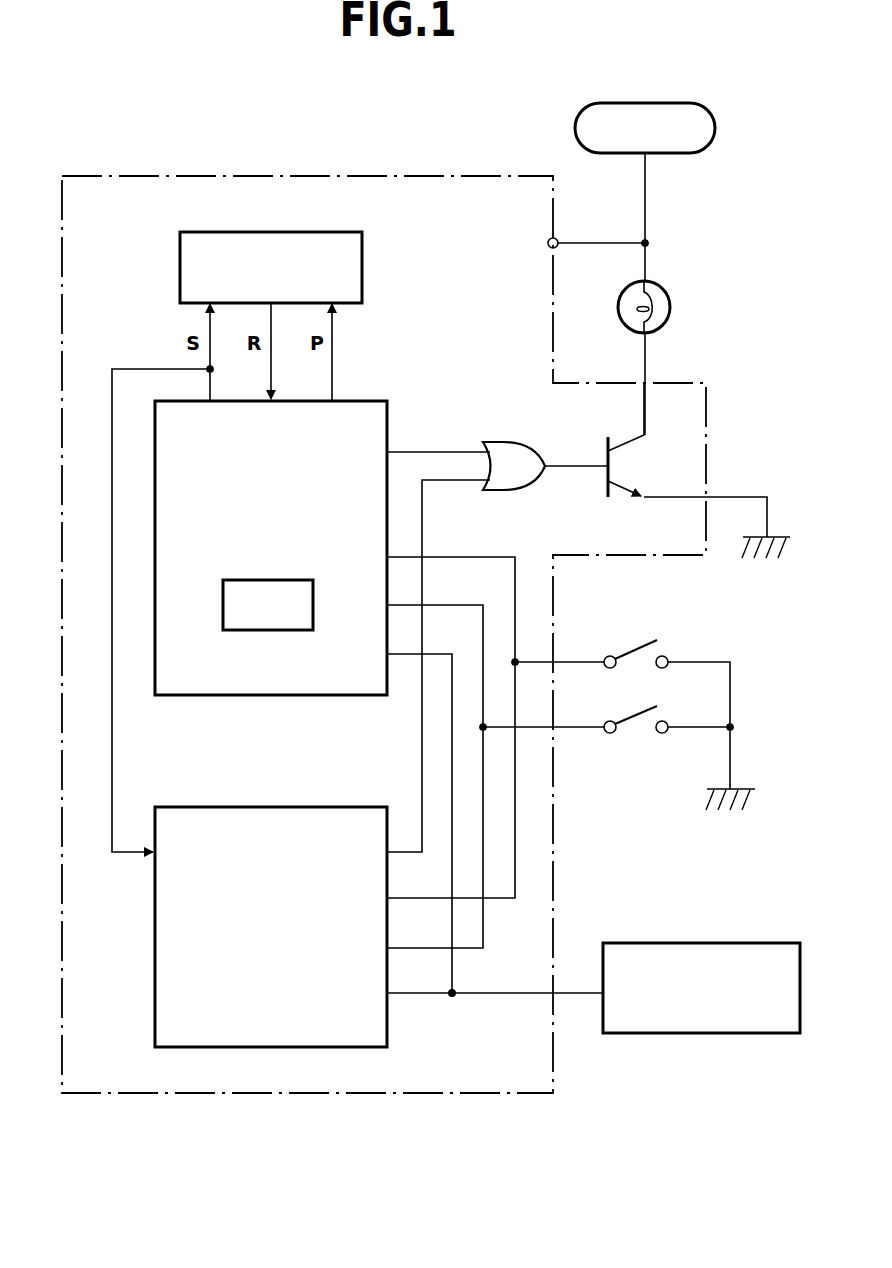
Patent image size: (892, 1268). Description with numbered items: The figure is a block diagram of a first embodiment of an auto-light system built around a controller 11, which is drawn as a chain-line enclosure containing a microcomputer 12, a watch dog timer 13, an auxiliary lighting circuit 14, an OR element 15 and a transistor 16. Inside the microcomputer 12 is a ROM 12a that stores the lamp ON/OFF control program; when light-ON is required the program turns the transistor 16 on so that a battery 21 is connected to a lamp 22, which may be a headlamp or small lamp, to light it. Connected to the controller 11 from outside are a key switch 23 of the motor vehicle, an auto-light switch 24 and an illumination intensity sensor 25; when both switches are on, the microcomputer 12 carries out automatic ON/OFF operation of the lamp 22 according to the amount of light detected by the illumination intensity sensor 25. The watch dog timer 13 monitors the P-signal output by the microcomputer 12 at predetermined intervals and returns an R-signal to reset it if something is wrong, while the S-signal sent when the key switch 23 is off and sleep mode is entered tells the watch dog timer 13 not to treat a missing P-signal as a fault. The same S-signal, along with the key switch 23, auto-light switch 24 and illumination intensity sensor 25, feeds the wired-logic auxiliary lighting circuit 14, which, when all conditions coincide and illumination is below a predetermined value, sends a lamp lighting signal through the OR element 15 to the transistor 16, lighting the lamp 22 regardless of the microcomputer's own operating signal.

The controller 11 is at (316, 173).
The microcomputer 12 is at (377, 400).
The ROM 12a is at (294, 580).
The watch dog timer 13 is at (362, 240).
The auxiliary lighting circuit 14 is at (290, 807).
The OR element 15 is at (513, 442).
The transistor 16 is at (603, 487).
The battery 21 is at (687, 103).
The lamp 22 is at (670, 296).
The key switch 23 is at (634, 640).
The auto-light switch 24 is at (636, 730).
The illumination intensity sensor 25 is at (720, 943).